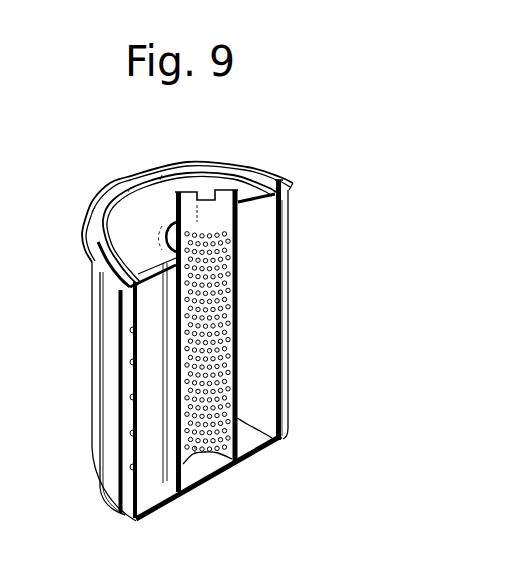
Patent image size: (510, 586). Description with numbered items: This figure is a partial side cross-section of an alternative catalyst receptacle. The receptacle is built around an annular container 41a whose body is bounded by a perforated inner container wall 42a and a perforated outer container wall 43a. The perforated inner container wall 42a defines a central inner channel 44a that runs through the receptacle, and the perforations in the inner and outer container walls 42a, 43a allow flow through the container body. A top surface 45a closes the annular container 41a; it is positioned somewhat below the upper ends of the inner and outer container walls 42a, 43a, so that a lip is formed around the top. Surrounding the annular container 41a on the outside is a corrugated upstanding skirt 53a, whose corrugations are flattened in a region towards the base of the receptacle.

The annular container 41a is at (262, 287).
The inner container wall 42a is at (222, 464).
The outer container wall 43a is at (282, 358).
The inner channel 44a is at (212, 219).
The top surface 45a is at (140, 221).
The corrugated upstanding skirt 53a is at (125, 390).